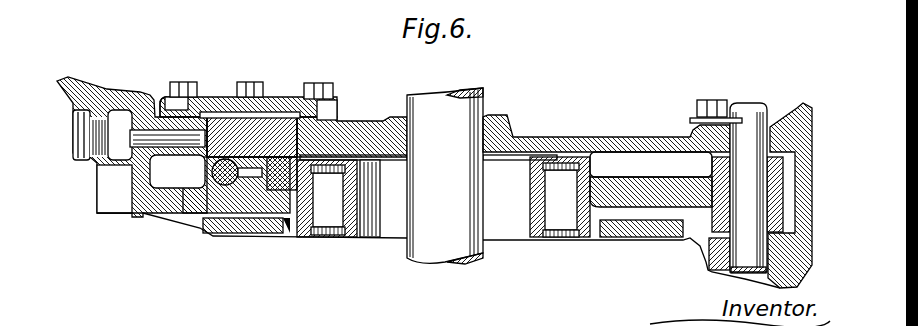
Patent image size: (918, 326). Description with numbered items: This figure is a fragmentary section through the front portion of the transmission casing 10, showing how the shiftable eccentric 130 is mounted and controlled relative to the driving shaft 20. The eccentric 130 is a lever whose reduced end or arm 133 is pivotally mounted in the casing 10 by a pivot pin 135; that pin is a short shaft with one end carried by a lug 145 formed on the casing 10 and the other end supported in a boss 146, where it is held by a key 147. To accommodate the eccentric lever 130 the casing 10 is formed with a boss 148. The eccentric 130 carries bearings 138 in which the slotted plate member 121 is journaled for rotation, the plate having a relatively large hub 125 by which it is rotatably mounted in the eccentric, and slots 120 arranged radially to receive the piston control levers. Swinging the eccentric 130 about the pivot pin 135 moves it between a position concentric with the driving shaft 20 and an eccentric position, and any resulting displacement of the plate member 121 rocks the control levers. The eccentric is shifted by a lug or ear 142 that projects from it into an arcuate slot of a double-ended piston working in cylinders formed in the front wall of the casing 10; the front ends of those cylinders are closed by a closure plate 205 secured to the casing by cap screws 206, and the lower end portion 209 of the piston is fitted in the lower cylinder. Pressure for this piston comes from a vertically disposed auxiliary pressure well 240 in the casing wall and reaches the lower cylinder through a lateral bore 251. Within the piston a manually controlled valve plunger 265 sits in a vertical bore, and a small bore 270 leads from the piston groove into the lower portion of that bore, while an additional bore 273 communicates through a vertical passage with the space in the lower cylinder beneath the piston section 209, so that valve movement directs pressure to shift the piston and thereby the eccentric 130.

The casing 10 is at (107, 80).
The driving shaft 20 is at (443, 115).
The slots 120 is at (643, 232).
The slotted plate member 121 is at (530, 222).
The hub 125 is at (538, 167).
The shiftable eccentric 130 is at (598, 150).
The reduced end or arm 133 is at (697, 185).
The pivot pin 135 is at (747, 123).
The bearings 138 is at (560, 187).
The lug or ear 142 is at (265, 112).
The lug 145 is at (713, 258).
The boss 146 is at (693, 125).
The key 147 is at (697, 114).
The boss 148 is at (813, 137).
The closure plate 205 is at (318, 83).
The cap screws 206 is at (195, 82).
The lower end portion of piston 209 is at (257, 125).
The auxiliary pressure well 240 is at (122, 148).
The lower bore 251 is at (163, 98).
The valve plunger 265 is at (231, 238).
The small bore 270 is at (222, 113).
The additional bore 273 is at (249, 172).